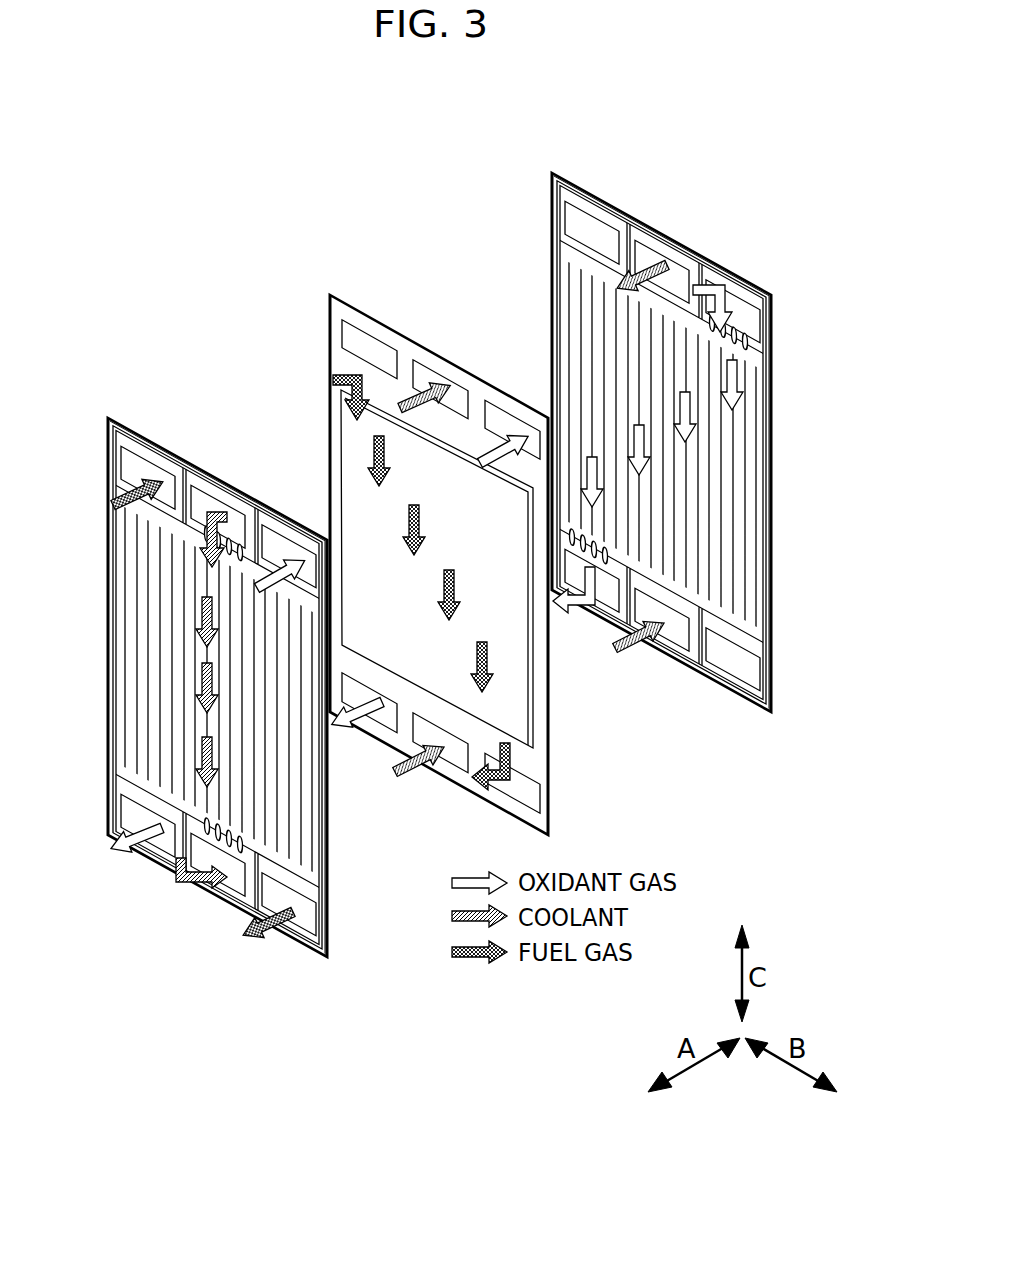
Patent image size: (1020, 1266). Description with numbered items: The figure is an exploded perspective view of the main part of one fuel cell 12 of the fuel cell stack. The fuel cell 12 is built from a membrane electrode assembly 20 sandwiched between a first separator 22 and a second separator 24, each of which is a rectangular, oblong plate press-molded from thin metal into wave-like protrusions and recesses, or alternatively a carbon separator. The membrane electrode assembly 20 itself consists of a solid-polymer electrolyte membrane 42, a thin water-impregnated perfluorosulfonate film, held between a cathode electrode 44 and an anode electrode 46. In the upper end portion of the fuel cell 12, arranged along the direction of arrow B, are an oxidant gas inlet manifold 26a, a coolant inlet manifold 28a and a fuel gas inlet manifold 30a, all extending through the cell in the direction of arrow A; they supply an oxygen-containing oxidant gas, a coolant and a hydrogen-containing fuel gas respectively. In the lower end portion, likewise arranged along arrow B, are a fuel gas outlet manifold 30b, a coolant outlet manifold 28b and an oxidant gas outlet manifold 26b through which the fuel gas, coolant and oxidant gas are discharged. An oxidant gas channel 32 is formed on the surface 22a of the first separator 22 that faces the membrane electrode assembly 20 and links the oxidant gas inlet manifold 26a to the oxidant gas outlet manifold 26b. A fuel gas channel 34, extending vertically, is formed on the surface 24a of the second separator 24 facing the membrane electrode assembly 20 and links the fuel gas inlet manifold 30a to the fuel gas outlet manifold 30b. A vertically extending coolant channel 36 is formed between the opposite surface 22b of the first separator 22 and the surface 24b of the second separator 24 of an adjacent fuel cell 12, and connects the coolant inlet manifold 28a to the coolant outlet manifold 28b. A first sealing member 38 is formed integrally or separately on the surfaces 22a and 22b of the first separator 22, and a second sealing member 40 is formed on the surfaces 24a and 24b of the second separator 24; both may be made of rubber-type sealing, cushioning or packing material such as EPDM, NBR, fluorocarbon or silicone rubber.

The fuel cell 12 is at (341, 101).
The membrane electrode assembly 20 is at (415, 531).
The first separator 22 is at (665, 407).
The second separator 24 is at (335, 630).
The surface of the first separator 22a is at (768, 587).
The surface of the first separator 22b is at (758, 562).
The surface of the second separator 24a is at (327, 818).
The surface of the second separator 24b is at (327, 840).
The oxidant gas inlet manifold 26a is at (283, 550).
The oxidant gas outlet manifold 26b is at (165, 862).
The coolant inlet manifold 28a is at (226, 510).
The coolant outlet manifold 28b is at (232, 893).
The fuel gas inlet manifold 30a is at (152, 473).
The fuel gas outlet manifold 30b is at (300, 930).
The oxidant gas channel 32 is at (607, 352).
The fuel gas channel 34 is at (160, 640).
The coolant channel 36 is at (167, 678).
The first sealing member 38 is at (618, 210).
The second sealing member 40 is at (113, 760).
The solid-polymer electrolyte membrane 42 is at (404, 352).
The cathode electrode 44 is at (360, 455).
The anode electrode 46 is at (353, 428).